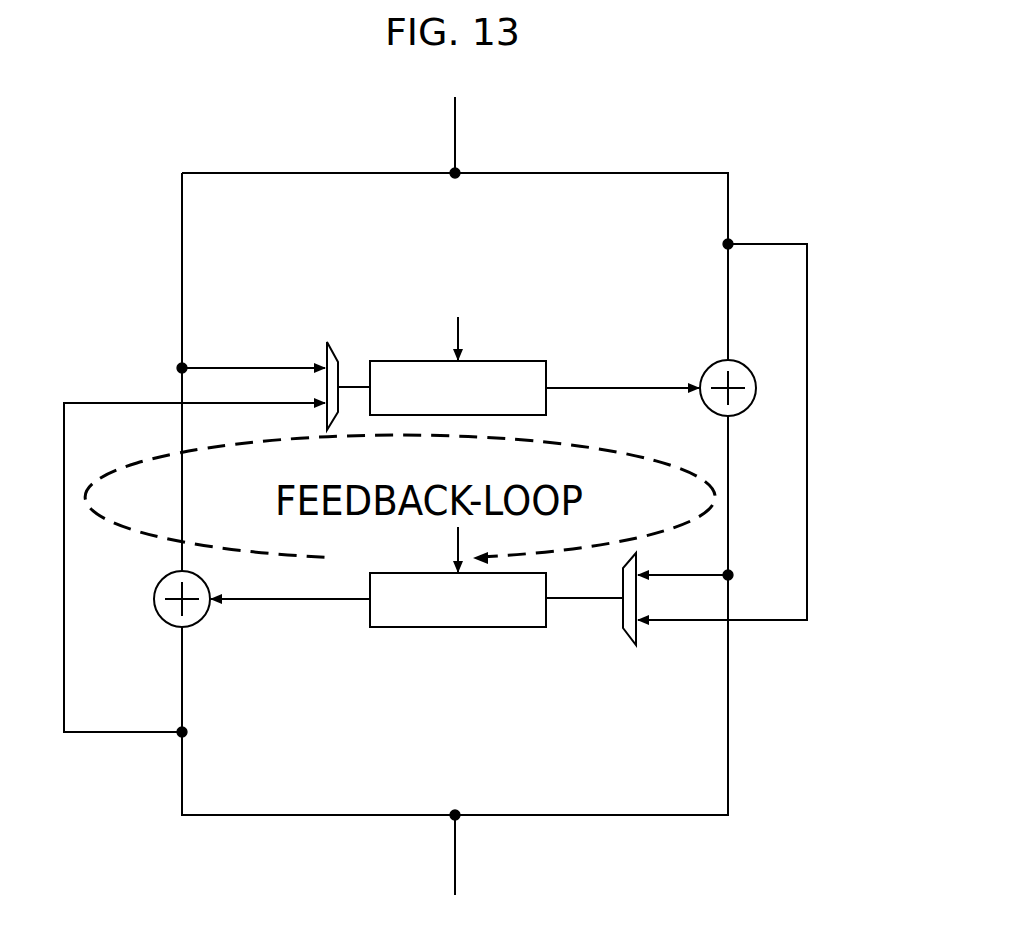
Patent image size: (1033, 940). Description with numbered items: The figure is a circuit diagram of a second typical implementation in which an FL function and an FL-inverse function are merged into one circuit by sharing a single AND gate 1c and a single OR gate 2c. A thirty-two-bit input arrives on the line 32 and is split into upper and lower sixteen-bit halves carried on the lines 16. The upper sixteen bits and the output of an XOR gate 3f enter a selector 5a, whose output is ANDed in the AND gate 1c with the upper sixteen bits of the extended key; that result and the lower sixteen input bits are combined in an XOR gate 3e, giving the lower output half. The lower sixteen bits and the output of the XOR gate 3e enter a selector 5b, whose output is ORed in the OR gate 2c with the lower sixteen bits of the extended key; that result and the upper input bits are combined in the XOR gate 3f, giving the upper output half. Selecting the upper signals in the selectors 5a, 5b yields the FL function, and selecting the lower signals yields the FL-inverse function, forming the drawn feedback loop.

The internal state line 16 is at (193, 214).
The signal line 32 is at (465, 149).
The selector 5a is at (333, 350).
The selector 5b is at (630, 637).
The AND gate 1c is at (532, 361).
The OR gate 2c is at (384, 628).
The XOR gate 3e is at (745, 364).
The XOR gate 3f is at (166, 624).